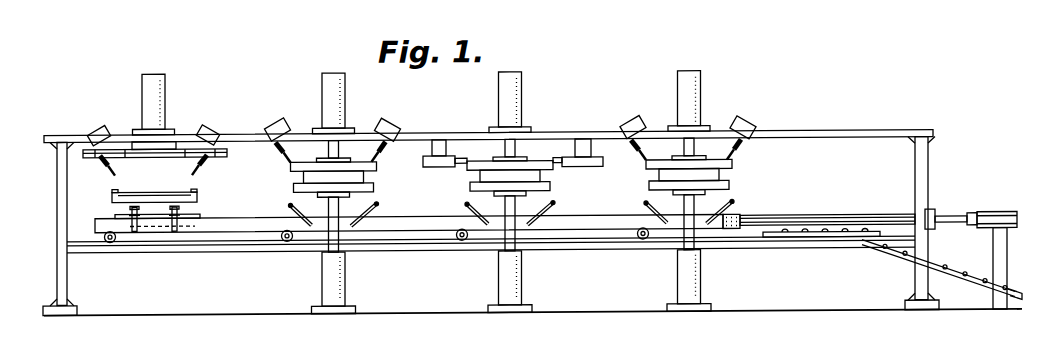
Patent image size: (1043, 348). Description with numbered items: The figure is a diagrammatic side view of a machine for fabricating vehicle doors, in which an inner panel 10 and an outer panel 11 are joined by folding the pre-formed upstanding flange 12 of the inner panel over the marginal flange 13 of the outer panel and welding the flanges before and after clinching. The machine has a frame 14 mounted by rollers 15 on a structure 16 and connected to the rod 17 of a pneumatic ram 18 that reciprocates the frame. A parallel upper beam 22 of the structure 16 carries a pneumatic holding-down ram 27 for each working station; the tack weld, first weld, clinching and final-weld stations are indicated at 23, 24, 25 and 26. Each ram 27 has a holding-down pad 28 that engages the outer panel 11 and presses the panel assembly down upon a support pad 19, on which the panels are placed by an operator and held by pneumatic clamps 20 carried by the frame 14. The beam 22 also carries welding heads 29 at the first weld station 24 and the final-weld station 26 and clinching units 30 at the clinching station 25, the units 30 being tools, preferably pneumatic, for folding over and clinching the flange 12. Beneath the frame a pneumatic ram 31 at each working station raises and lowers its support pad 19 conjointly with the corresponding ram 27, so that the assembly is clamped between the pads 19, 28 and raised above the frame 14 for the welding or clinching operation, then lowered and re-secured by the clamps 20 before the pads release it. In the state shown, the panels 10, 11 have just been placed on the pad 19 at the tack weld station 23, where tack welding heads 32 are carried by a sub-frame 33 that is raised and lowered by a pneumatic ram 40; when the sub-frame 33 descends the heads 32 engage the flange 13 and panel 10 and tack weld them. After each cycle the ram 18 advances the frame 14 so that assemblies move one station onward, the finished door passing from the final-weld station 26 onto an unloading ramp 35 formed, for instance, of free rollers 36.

The inner panel 10 is at (117, 213).
The outer panel 11 is at (153, 188).
The upstanding flange 12 is at (200, 194).
The marginal flange 13 is at (116, 188).
The frame 14 is at (232, 226).
The rollers 15 is at (108, 240).
The structure 16 is at (64, 287).
The rod 17 is at (801, 214).
The pneumatic ram 18 is at (997, 212).
The support pad 19 is at (289, 203).
The pneumatic clamps 20 is at (172, 232).
The upper beam 22 is at (813, 132).
The tack weld station 23 is at (134, 108).
The first weld station 24 is at (313, 112).
The clinching station 25 is at (490, 108).
The final-weld station 26 is at (666, 105).
The pneumatic holding-down ram 27 is at (340, 75).
The holding-down pad 28 is at (349, 157).
The welding heads 29 is at (283, 150).
The clinching units 30 is at (448, 152).
The pneumatic ram 31 is at (334, 279).
The tack welding heads 32 is at (122, 148).
The sub-frame 33 is at (174, 153).
The unloading ramp 35 is at (892, 253).
The free rollers 36 is at (985, 274).
The pneumatic ram 40 is at (166, 90).